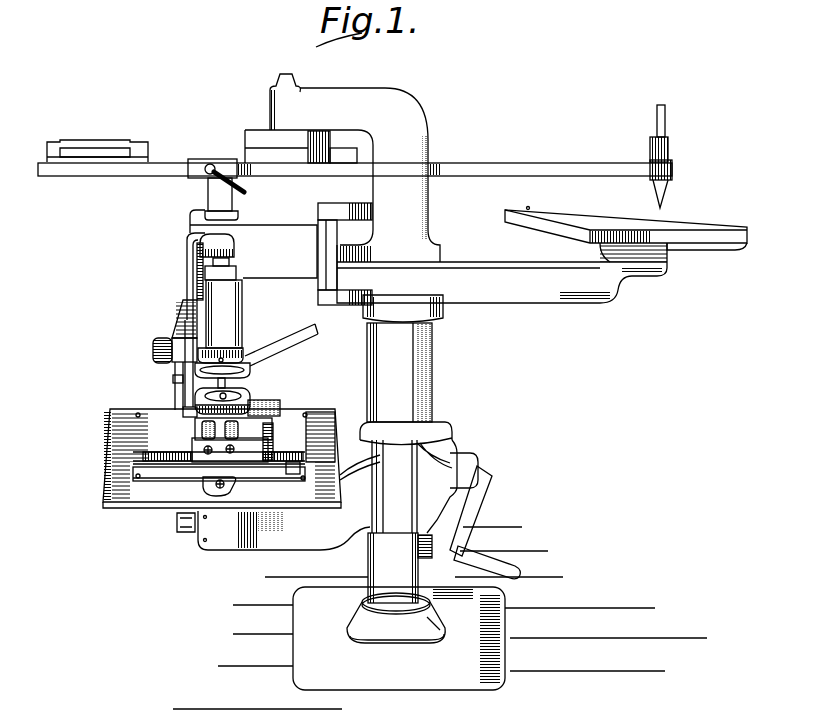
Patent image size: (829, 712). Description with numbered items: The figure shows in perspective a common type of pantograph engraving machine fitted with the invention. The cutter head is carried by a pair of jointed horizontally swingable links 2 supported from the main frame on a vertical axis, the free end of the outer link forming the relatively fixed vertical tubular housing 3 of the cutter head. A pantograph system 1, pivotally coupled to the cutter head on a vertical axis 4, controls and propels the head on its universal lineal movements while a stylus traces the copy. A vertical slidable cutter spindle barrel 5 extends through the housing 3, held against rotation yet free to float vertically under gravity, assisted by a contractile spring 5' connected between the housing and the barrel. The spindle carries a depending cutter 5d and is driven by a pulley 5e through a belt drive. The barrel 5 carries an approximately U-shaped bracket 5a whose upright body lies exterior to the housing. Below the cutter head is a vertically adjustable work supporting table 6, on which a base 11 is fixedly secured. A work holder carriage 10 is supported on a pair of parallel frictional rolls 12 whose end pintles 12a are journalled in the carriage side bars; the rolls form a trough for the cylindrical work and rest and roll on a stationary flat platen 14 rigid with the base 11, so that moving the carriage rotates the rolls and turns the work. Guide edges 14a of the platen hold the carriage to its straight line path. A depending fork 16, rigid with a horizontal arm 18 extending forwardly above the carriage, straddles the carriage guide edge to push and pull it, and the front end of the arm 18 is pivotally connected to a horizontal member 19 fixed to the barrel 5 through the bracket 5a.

The pantograph system 1 is at (160, 167).
The jointed horizontally swingable links 2 is at (258, 238).
The cutter head housing 3 is at (233, 313).
The vertical axis 4 is at (213, 182).
The cutter spindle barrel 5 is at (238, 262).
The contractile spring 5' is at (181, 245).
The U-shaped bracket 5a is at (200, 277).
The cutter 5d is at (240, 388).
The pulley 5e is at (176, 372).
The work supporting table 6 is at (128, 497).
The work holder carriage 10 is at (253, 455).
The base or support 11 is at (133, 472).
The rolls 12 is at (202, 427).
The end pintles or shaft ends 12a is at (208, 454).
The bed, platen or rail 14 is at (292, 432).
The guide or stop edges 14a is at (293, 466).
The depending fork 16 is at (284, 428).
The horizontal arm 18 is at (268, 428).
The horizontal member 19 is at (186, 408).